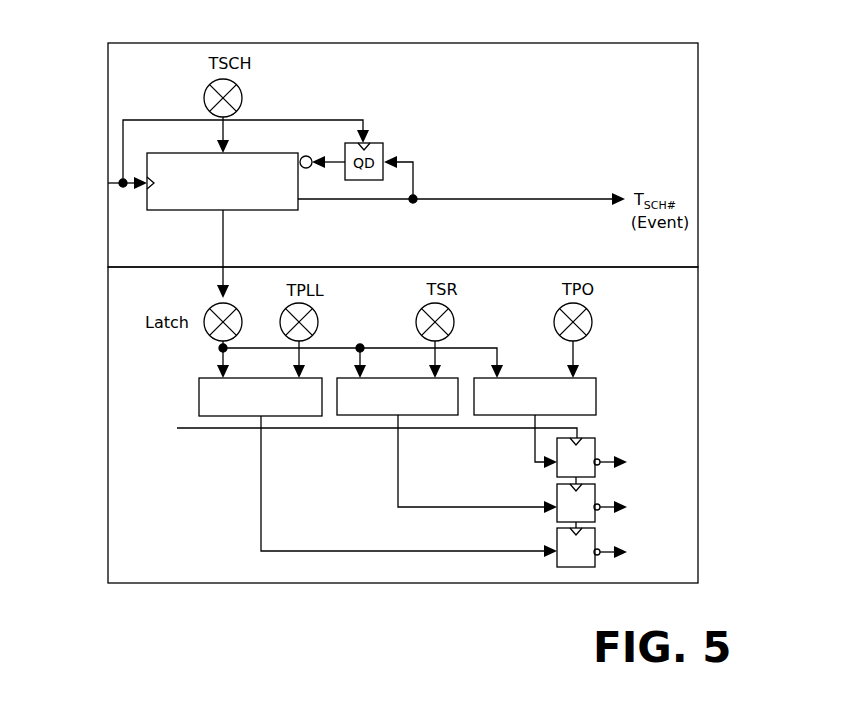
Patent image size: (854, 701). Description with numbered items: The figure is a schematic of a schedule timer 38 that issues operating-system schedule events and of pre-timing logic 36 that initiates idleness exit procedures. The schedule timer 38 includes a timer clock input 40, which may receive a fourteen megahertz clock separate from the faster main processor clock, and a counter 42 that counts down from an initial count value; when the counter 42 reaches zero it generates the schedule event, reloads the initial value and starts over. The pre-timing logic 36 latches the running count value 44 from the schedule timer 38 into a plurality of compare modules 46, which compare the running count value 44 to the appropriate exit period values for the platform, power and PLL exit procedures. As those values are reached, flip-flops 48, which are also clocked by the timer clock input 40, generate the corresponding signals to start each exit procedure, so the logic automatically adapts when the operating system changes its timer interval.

The pre-timing logic 36 is at (698, 377).
The schedule timer 38 is at (698, 88).
The timer clock input 40 is at (48, 155).
The counter 42 is at (267, 205).
The running count value 44 is at (223, 278).
The compare modules 46 is at (170, 393).
The flip-flops 48 is at (609, 428).